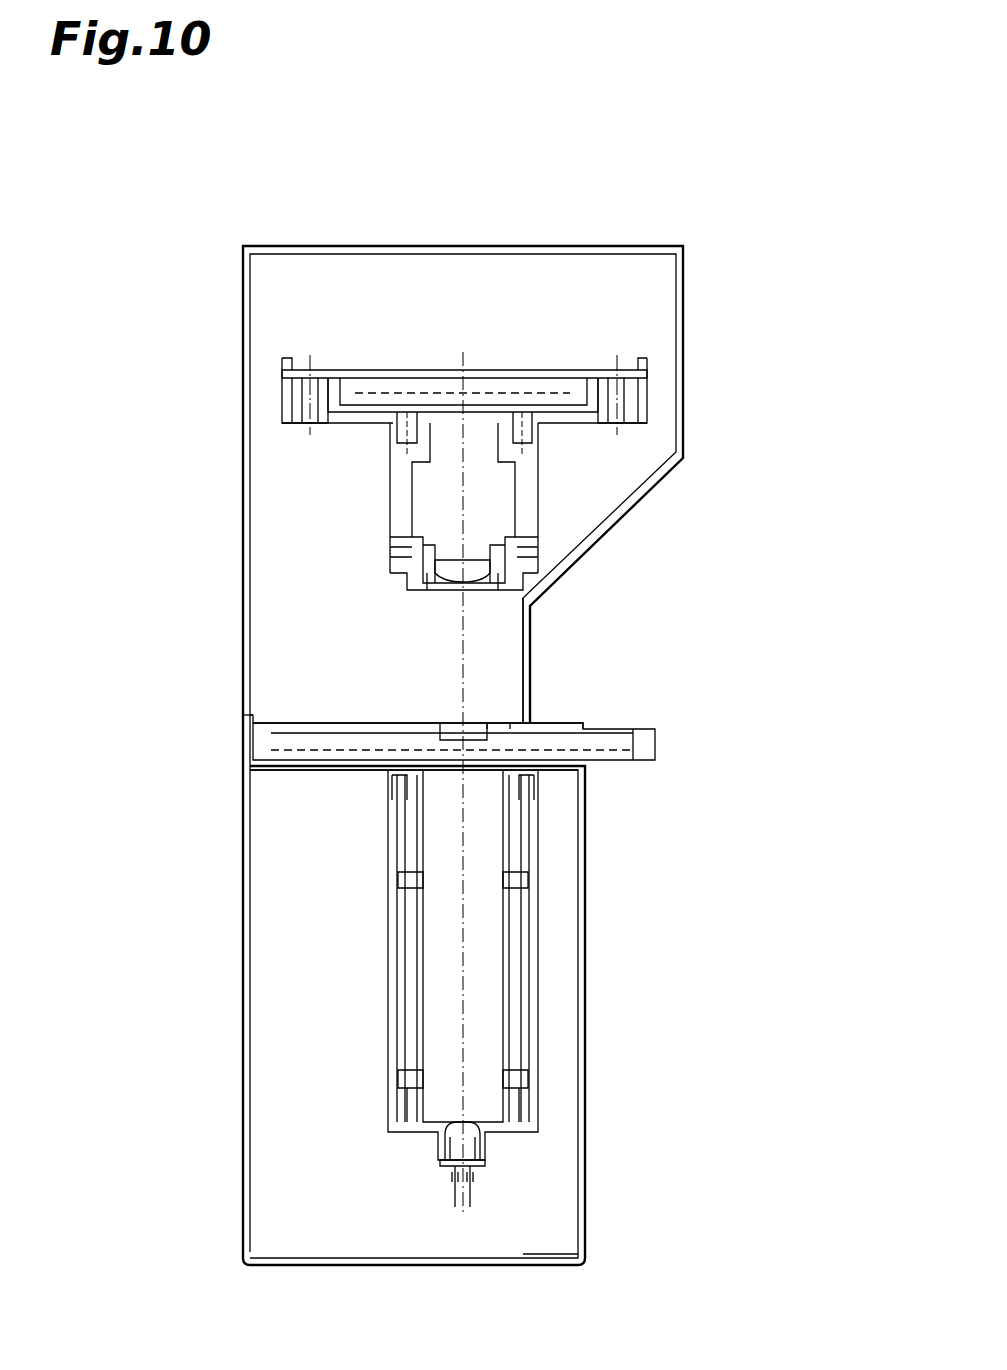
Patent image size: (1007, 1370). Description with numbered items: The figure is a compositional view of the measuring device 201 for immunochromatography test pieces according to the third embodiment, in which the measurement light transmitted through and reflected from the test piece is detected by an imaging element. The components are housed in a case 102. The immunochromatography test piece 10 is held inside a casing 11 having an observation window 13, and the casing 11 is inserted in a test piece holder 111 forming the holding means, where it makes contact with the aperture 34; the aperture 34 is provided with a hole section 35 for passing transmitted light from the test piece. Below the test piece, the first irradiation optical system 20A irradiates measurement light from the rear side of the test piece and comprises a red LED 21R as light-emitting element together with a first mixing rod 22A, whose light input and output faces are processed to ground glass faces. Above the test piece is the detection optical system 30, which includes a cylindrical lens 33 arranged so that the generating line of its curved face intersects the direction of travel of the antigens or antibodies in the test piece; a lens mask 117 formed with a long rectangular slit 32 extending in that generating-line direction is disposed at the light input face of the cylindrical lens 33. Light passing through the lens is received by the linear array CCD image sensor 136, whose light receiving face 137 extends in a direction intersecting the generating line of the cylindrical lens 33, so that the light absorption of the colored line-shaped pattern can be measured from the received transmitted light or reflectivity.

The measuring device 201 is at (228, 188).
The case 102 is at (683, 350).
The linear array CCD image sensor 136 is at (478, 392).
The light receiving face 137 is at (455, 385).
The detection optical system 30 is at (376, 489).
The cylindrical lens 33 is at (445, 556).
The slit 32 is at (467, 588).
The lens mask 117 is at (490, 590).
The casing 11 is at (645, 740).
The test piece holder 111 is at (290, 722).
The observation window 13 is at (432, 735).
The hole section 35 is at (488, 722).
The aperture 34 is at (552, 722).
The immunochromatography test piece 10 is at (588, 762).
The first irradiation optical system 20A is at (368, 932).
The first mixing rod 22A is at (433, 1102).
The red LED 21R is at (450, 1137).